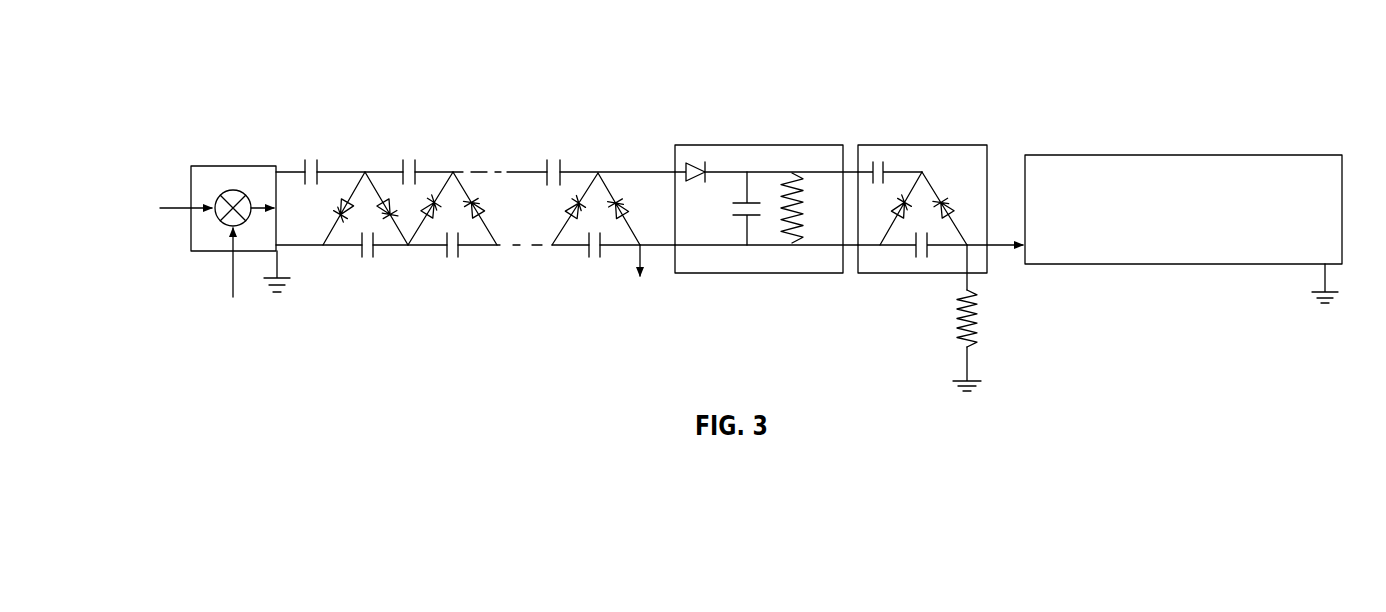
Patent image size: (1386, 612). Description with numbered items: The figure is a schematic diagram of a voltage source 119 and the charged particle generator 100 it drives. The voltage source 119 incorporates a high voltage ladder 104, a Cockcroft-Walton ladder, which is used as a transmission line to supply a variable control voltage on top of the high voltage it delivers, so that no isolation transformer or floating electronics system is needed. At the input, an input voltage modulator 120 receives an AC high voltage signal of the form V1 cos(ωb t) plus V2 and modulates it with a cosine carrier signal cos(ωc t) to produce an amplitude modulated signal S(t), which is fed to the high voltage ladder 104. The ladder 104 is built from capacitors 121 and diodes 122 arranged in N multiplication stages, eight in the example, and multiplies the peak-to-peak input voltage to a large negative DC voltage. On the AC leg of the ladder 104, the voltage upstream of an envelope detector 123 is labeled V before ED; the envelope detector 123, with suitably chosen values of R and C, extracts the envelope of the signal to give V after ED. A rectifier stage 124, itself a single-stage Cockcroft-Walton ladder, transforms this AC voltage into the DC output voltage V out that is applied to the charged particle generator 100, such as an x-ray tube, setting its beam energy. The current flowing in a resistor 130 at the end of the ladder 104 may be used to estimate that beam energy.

The voltage source 119 is at (175, 72).
The input voltage modulator 120 is at (250, 165).
The high voltage ladder 104 is at (464, 134).
The capacitors 121 is at (318, 168).
The diodes 122 is at (390, 220).
The envelope detector 123 is at (732, 143).
The rectifier stage 124 is at (932, 143).
The resistor 130 is at (957, 325).
The charged particle generator 100 is at (1082, 153).